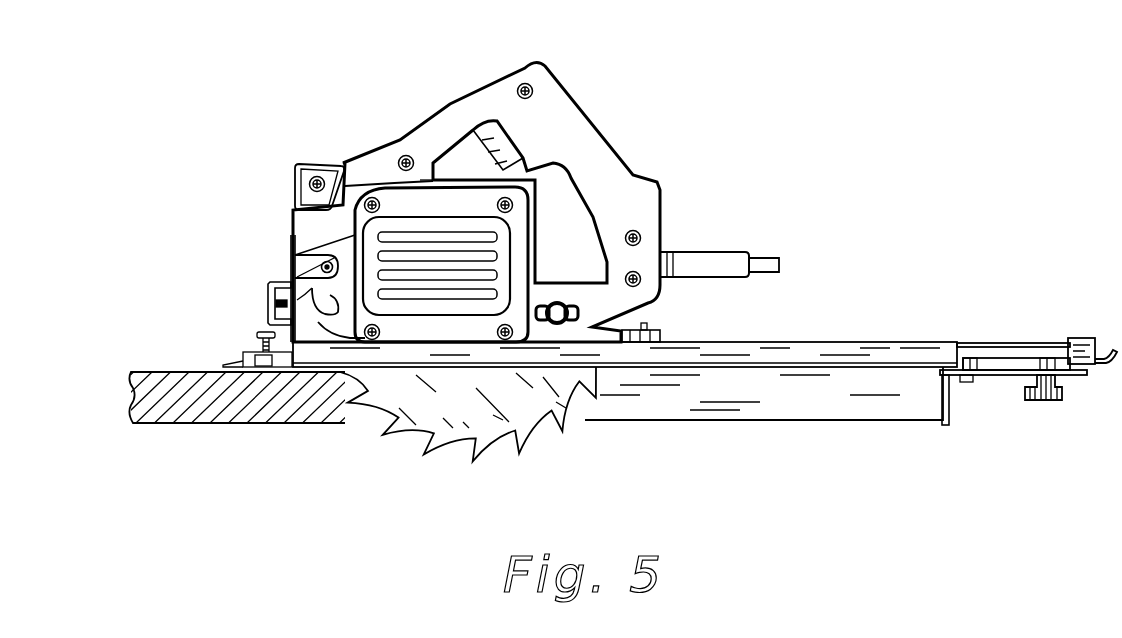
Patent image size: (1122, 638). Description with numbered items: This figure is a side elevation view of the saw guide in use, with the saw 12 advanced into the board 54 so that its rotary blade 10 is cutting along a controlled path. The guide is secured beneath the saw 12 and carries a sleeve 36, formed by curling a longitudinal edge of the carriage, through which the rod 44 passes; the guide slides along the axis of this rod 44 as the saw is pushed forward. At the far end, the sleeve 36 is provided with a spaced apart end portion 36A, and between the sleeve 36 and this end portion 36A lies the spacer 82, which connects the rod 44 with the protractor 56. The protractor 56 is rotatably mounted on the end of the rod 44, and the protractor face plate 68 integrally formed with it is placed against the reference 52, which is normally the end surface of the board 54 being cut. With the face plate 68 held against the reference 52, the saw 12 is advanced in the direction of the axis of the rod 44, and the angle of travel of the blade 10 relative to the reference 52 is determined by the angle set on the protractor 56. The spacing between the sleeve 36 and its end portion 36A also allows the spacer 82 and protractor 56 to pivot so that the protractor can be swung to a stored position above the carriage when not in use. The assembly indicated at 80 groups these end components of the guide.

The blade 10 is at (434, 394).
The saw 12 is at (371, 142).
The sleeve 36 is at (863, 343).
The sleeve end portion 36A is at (1083, 340).
The rod 44 is at (978, 348).
The reference 52 is at (913, 414).
The board 54 is at (220, 415).
The protractor 56 is at (1072, 377).
The protractor face plate 68 is at (952, 397).
The fence adjustment assembly 80 is at (991, 330).
The spacer 82 is at (983, 363).